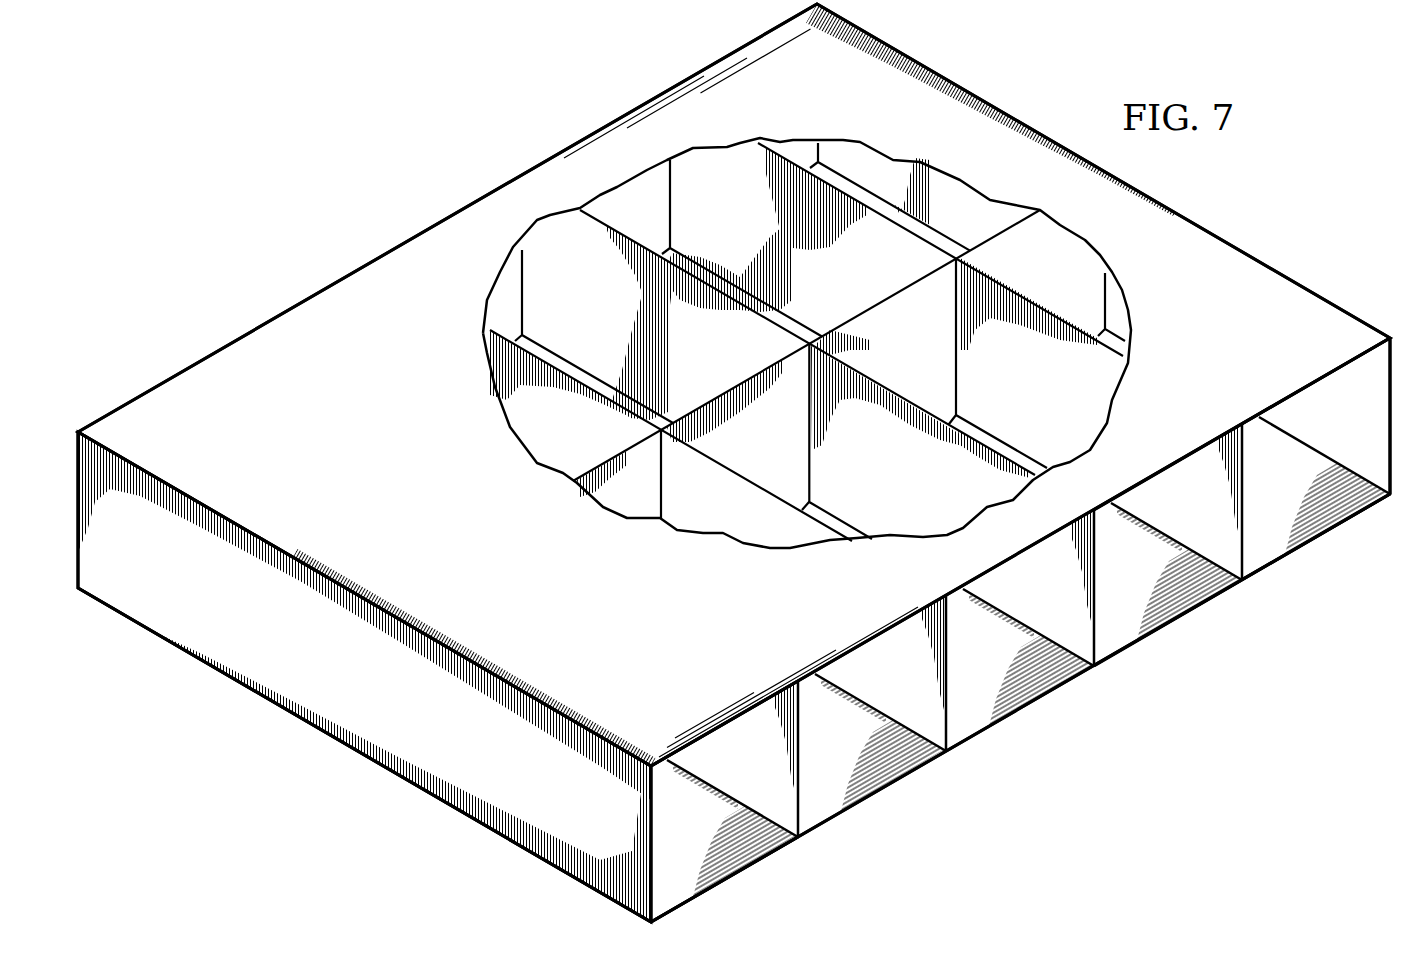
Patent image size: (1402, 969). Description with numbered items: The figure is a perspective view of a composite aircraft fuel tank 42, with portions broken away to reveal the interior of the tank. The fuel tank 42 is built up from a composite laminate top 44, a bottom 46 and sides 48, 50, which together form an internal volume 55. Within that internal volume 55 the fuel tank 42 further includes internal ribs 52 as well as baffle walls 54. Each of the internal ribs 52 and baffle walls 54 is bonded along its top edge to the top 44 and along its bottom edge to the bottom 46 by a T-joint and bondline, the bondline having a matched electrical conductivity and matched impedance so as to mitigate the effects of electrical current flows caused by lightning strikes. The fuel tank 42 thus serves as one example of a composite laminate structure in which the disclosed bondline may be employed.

The composite aircraft fuel tank 42 is at (734, 463).
The composite laminate top 44 is at (734, 385).
The bottom 46 is at (724, 801).
The side 48 is at (364, 677).
The side 50 is at (1316, 459).
The internal ribs 52 is at (1168, 545).
The baffle walls 54 is at (807, 342).
The internal volume 55 is at (734, 708).